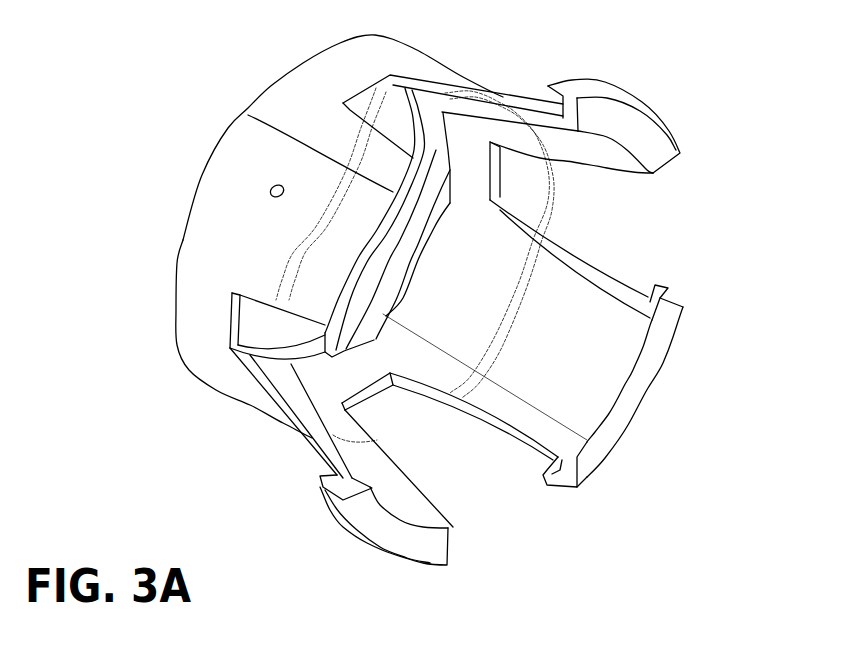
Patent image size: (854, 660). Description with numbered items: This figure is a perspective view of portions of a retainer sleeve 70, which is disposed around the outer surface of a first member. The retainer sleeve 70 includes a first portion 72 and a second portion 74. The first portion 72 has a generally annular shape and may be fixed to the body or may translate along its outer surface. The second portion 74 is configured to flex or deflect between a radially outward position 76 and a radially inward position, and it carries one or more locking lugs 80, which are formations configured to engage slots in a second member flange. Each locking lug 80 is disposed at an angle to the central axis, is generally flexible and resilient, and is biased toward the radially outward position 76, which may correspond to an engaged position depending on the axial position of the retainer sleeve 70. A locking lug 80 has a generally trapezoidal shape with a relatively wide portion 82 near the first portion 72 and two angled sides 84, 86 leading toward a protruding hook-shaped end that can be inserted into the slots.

The retainer sleeve 70 is at (150, 118).
The first portion 72 is at (203, 260).
The second portion 74 is at (287, 443).
The radially outward position 76 is at (700, 120).
The locking lug 80 is at (463, 520).
The wide portion 82 is at (332, 120).
The angled side 84 is at (260, 283).
The angled side 86 is at (393, 168).